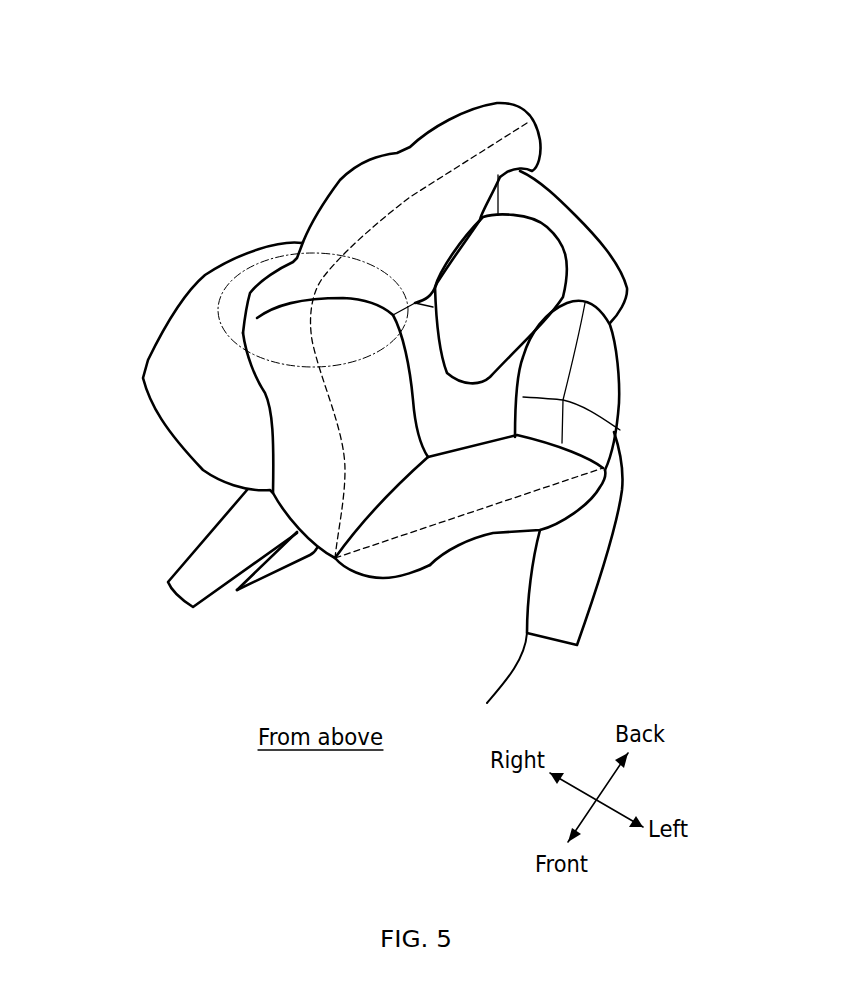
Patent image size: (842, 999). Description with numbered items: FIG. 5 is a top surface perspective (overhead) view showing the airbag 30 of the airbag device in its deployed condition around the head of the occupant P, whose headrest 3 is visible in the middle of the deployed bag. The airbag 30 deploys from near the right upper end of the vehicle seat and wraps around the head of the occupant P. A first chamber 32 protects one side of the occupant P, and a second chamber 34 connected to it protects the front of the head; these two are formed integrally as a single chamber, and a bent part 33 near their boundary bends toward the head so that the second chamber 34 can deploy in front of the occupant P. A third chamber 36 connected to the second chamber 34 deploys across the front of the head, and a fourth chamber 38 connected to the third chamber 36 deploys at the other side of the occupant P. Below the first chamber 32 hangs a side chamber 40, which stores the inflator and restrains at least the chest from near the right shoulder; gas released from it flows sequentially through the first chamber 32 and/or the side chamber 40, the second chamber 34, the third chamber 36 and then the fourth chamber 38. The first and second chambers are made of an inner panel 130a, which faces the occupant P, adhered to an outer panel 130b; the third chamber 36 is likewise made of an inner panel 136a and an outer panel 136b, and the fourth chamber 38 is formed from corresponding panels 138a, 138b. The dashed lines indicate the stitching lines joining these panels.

The airbag 30 is at (467, 84).
The first chamber 32 is at (390, 170).
The bent part 33 is at (243, 327).
The second chamber 34 is at (280, 387).
The third chamber 36 is at (483, 527).
The fourth chamber 38 is at (602, 338).
The side chamber 40 is at (205, 303).
The inner panel 130a is at (487, 200).
The outer panel 130b is at (340, 178).
The inner panel 136a is at (460, 452).
The outer panel 136b is at (383, 577).
The left inner panel 138a is at (620, 430).
The left outer panel 138b is at (620, 380).
The occupant P is at (553, 242).
The headrest 3 is at (618, 278).